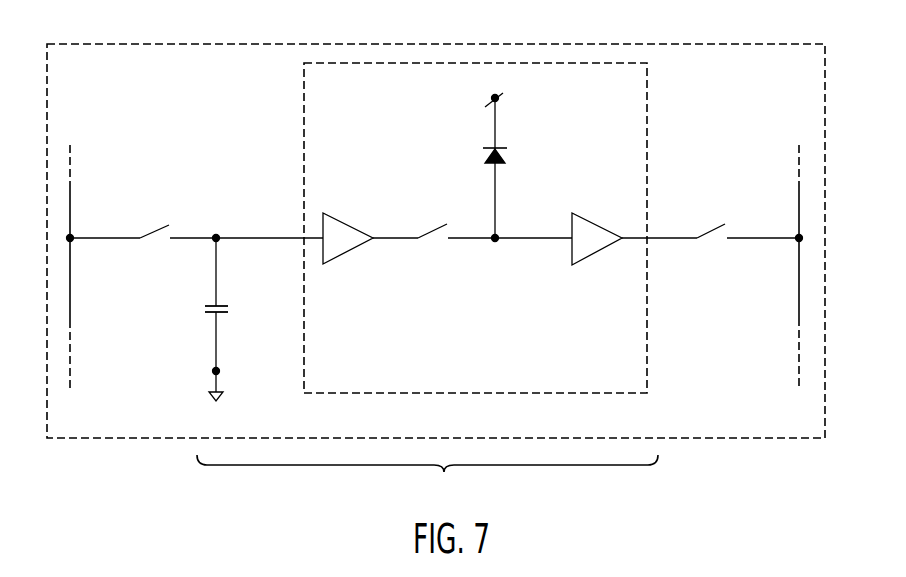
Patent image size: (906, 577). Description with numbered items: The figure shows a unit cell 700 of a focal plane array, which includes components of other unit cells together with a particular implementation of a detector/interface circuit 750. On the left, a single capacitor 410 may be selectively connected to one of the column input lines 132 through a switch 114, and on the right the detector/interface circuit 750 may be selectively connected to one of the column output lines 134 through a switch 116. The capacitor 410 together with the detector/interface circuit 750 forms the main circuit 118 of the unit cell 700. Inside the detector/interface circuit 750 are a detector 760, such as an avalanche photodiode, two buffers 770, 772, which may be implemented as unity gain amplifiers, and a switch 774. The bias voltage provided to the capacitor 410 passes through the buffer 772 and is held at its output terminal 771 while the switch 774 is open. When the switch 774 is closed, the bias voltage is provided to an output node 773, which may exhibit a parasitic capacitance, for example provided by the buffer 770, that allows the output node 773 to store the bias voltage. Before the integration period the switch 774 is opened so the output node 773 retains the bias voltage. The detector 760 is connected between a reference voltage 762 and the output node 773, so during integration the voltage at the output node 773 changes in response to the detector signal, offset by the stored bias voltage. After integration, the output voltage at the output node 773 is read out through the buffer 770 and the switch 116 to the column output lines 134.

The unit cell 700 is at (718, 42).
The detector/interface circuit 750 is at (500, 356).
The main circuit 118 is at (427, 480).
The column input lines 132 is at (72, 355).
The column output lines 134 is at (797, 359).
The switch 114 is at (154, 223).
The switch 116 is at (705, 222).
The capacitor 410 is at (230, 309).
The buffer 772 is at (343, 222).
The buffer 770 is at (592, 222).
The output terminal 771 is at (395, 243).
The output node 773 is at (496, 244).
The switch 774 is at (428, 222).
The detector 760 is at (509, 150).
The reference voltage 762 is at (530, 98).